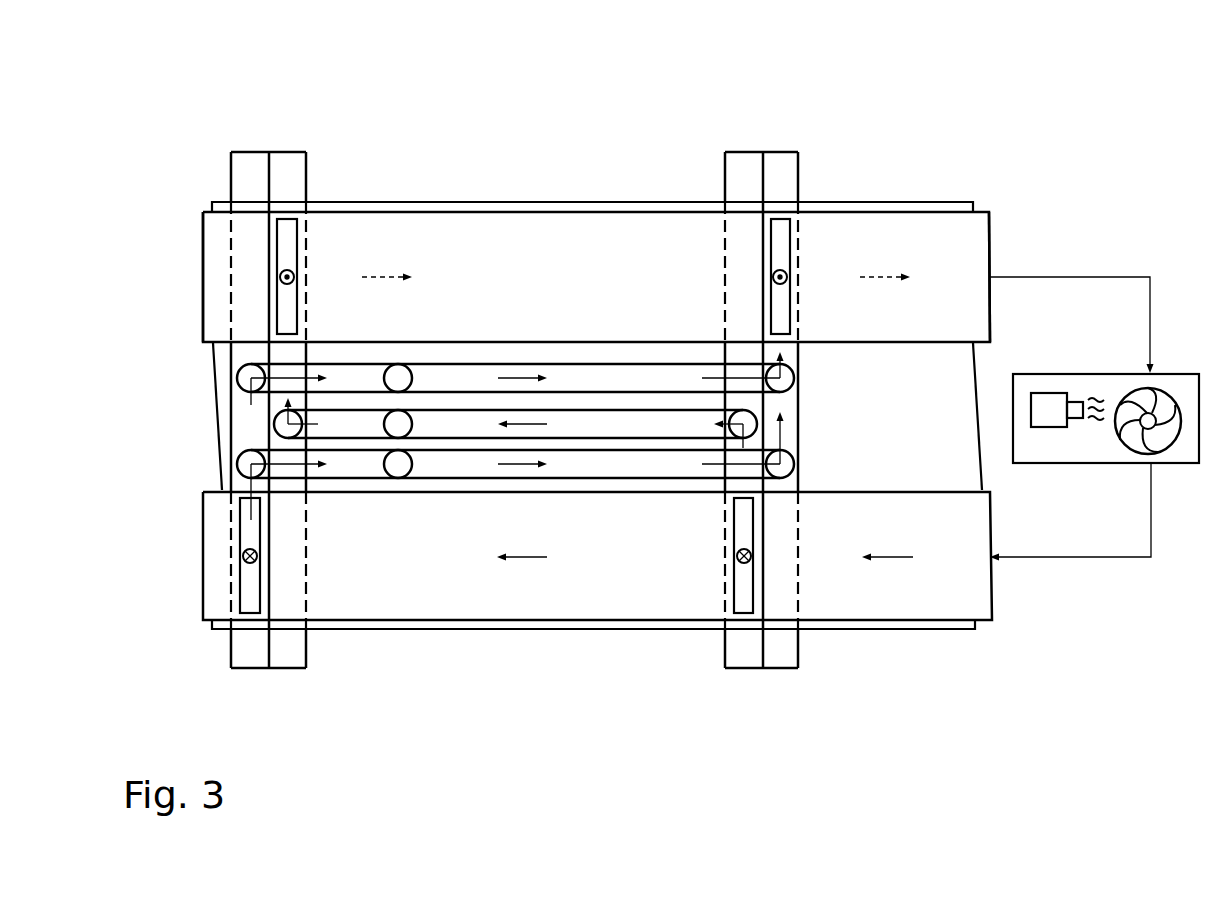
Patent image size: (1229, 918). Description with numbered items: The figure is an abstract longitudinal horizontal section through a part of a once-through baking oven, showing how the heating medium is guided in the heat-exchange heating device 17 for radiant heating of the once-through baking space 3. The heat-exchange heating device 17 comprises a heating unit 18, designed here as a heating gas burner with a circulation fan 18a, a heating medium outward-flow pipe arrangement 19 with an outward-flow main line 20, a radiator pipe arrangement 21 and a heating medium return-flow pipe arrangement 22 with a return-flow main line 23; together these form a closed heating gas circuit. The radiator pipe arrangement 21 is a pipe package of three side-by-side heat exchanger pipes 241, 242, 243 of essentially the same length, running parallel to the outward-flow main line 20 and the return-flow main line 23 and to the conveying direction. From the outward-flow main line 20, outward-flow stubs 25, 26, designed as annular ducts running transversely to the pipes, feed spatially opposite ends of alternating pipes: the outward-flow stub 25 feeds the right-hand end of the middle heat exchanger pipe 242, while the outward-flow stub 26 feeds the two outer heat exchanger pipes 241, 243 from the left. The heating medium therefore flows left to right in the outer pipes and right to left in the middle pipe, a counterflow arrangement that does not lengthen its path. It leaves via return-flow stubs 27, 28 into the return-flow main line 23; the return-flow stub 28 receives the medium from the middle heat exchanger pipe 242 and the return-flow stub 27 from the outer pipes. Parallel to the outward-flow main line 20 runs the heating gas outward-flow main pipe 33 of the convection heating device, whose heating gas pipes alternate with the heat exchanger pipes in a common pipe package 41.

The once-through baking space 3 is at (865, 430).
The heat-exchange heating device 17 is at (909, 193).
The heating unit 18 is at (1101, 513).
The circulation fan 18a is at (1150, 424).
The heating medium outward-flow pipe arrangement 19 is at (364, 626).
The outward-flow main line 20 is at (438, 597).
The radiator pipe arrangement 21 is at (515, 402).
The heating medium return-flow pipe arrangement 22 is at (371, 203).
The return-flow main line 23 is at (432, 228).
The heat exchanger pipe 241 is at (643, 465).
The heat exchanger pipe 242 is at (620, 427).
The heat exchanger pipe 243 is at (585, 378).
The outward-flow stub 25 is at (745, 647).
The outward-flow stub 26 is at (248, 652).
The return-flow stub 27 is at (783, 647).
The return-flow stub 28 is at (285, 652).
The heating gas outward-flow main pipe 33 is at (842, 530).
The pipe package 41 is at (458, 402).